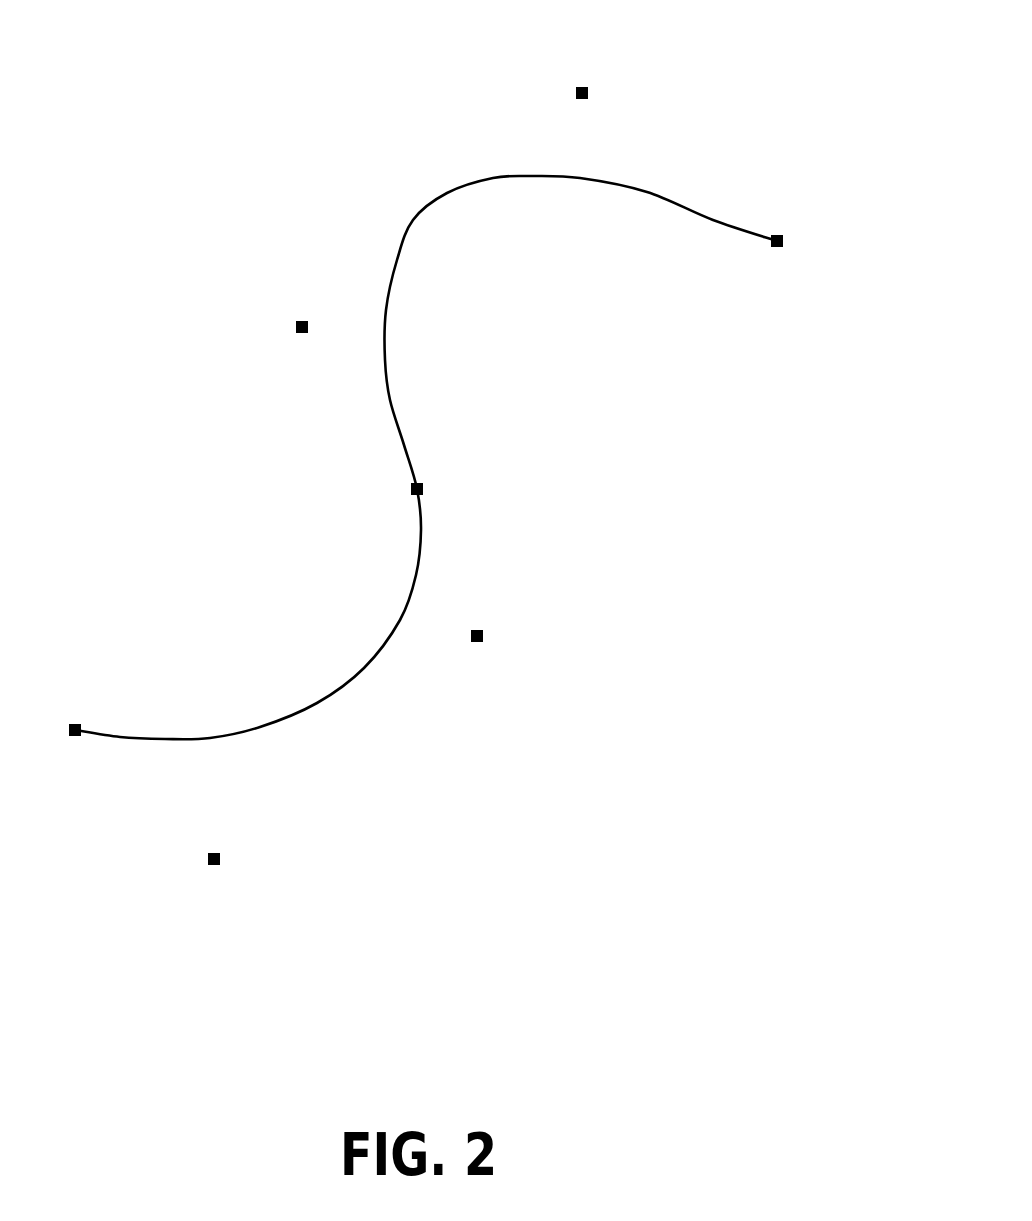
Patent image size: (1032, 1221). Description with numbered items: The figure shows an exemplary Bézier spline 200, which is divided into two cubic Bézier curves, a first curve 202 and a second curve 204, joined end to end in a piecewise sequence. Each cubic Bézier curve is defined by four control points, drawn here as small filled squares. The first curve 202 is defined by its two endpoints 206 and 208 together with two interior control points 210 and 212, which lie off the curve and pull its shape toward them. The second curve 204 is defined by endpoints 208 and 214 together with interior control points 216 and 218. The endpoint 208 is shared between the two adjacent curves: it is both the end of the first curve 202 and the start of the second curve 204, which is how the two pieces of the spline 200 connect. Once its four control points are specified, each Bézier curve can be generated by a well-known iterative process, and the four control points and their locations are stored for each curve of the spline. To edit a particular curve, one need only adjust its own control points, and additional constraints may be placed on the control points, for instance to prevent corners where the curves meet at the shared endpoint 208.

The Bézier spline 200 is at (467, 530).
The curve 202 is at (364, 668).
The curve 204 is at (493, 178).
The endpoint 206 is at (85, 712).
The endpoint 208 is at (444, 484).
The interior control point 210 is at (256, 824).
The interior control point 212 is at (497, 620).
The endpoint 214 is at (787, 217).
The interior control point 216 is at (356, 277).
The interior control point 218 is at (590, 82).